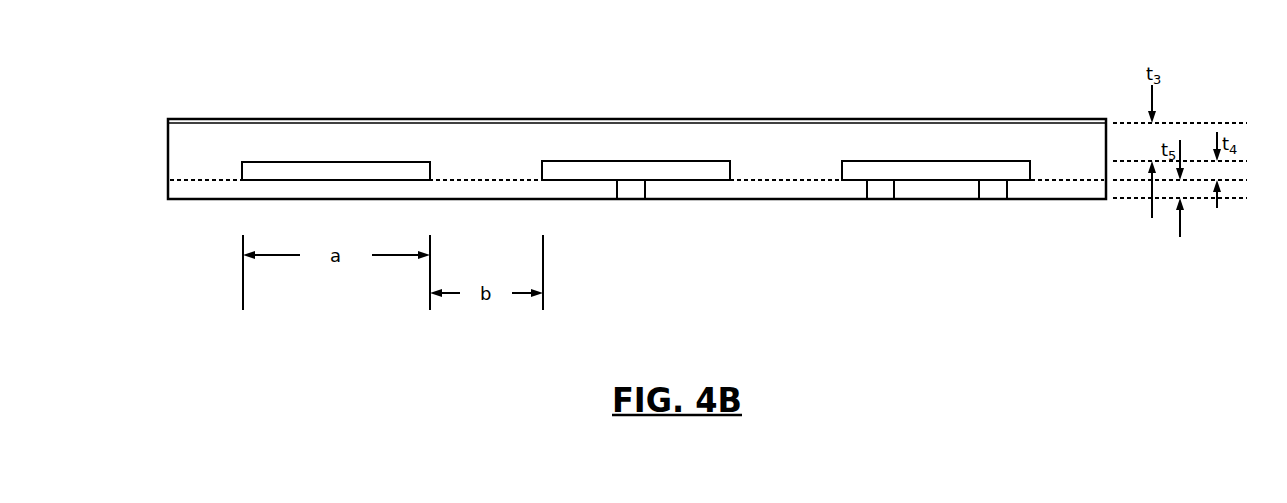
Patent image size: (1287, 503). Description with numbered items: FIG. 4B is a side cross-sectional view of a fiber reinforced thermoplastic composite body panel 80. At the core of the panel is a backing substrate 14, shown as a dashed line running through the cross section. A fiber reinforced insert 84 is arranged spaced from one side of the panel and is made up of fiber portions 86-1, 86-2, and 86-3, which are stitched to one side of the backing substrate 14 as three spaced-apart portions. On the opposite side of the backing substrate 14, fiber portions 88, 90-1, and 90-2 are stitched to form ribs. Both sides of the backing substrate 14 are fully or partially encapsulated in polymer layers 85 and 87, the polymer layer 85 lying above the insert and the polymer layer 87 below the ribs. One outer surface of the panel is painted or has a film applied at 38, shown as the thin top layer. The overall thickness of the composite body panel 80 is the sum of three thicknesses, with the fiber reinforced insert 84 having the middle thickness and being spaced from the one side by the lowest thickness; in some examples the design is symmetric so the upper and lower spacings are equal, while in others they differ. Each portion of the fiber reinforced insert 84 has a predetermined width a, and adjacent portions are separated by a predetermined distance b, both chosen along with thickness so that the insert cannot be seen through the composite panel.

The backing substrate 14 is at (190, 182).
The paint or film 38 is at (318, 119).
The fiber reinforced thermoplastic composite body panel 80 is at (486, 96).
The fiber reinforced insert 84 is at (205, 168).
The polymer layer 85 is at (790, 140).
The fiber portion 86-1 is at (388, 182).
The fiber portion 86-2 is at (667, 181).
The fiber portion 86-3 is at (939, 182).
The polymer layer 87 is at (818, 195).
The fiber portion 88 is at (636, 199).
The fiber portion 90-1 is at (875, 199).
The fiber portion 90-2 is at (993, 199).